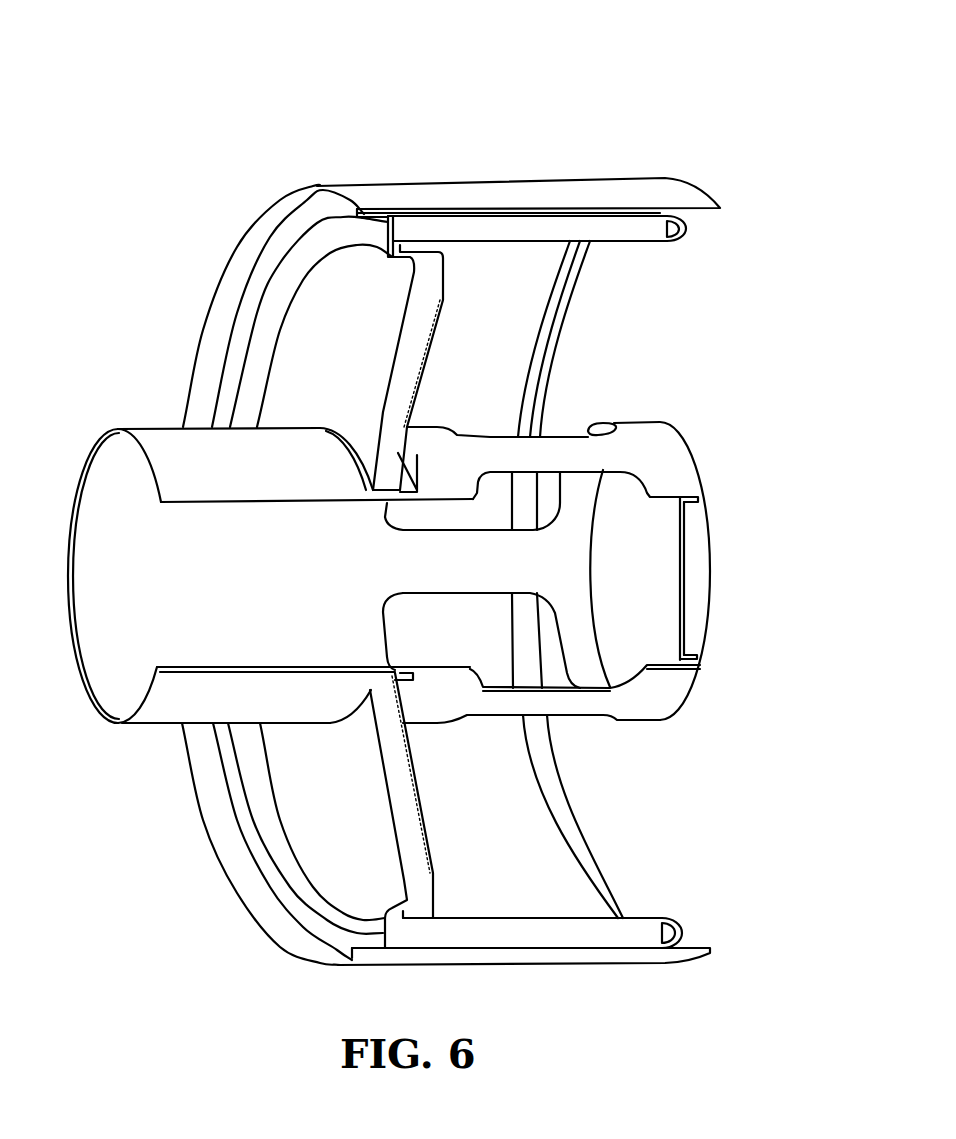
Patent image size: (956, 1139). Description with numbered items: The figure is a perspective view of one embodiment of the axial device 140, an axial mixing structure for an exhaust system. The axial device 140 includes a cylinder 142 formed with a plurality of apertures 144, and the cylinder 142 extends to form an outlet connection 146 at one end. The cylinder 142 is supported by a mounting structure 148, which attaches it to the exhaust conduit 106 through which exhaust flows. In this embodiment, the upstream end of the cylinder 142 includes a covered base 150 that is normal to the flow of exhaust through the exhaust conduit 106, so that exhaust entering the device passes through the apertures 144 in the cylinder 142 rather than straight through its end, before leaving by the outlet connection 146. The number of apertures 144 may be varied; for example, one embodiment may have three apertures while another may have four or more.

The exhaust conduit 106 is at (557, 197).
The axial device 140 is at (672, 745).
The cylinder 142 is at (573, 447).
The apertures 144 is at (490, 650).
The outlet connection 146 is at (183, 463).
The mounting structure 148 is at (413, 330).
The covered base 150 is at (640, 600).